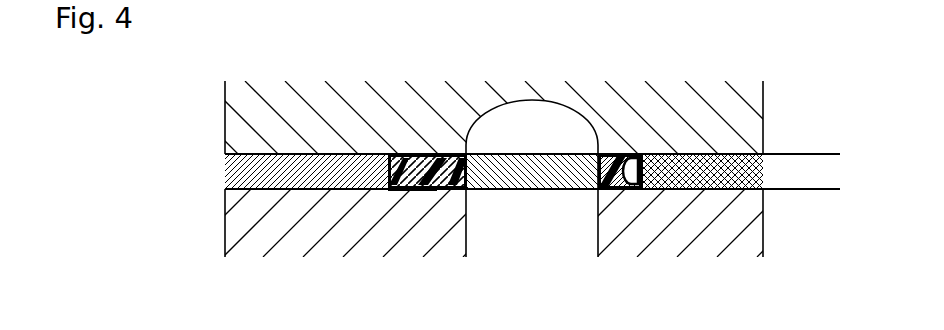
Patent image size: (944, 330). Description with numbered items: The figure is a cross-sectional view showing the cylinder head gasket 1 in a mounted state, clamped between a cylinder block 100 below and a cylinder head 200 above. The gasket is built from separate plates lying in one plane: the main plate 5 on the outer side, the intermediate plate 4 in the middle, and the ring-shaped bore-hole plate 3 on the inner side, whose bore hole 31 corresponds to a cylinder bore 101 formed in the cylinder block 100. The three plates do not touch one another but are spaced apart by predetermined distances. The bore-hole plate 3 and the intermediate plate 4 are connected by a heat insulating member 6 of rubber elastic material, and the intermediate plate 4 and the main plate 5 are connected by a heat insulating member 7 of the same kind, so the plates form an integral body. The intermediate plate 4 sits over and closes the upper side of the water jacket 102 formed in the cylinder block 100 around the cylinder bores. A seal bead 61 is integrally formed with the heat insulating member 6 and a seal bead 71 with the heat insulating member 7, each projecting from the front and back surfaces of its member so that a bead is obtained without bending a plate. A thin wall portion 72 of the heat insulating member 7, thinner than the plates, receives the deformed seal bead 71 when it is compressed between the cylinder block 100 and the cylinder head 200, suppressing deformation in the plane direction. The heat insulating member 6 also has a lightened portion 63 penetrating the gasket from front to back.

The cylinder head gasket 1 is at (497, 172).
The bore-hole plate 3 is at (702, 154).
The intermediate plate 4 is at (532, 154).
The main plate 5 is at (317, 154).
The heat insulating member 6 is at (637, 180).
The heat insulating member 7 is at (417, 180).
The bore hole 31 is at (794, 165).
The seal bead 61 is at (613, 190).
The lightened portion 63 is at (630, 190).
The seal bead 71 is at (430, 190).
The thin wall portion 72 is at (405, 190).
The cylinder block 100 is at (226, 236).
The cylinder bore 101 is at (846, 250).
The water jacket 102 is at (550, 248).
The cylinder head 200 is at (226, 118).